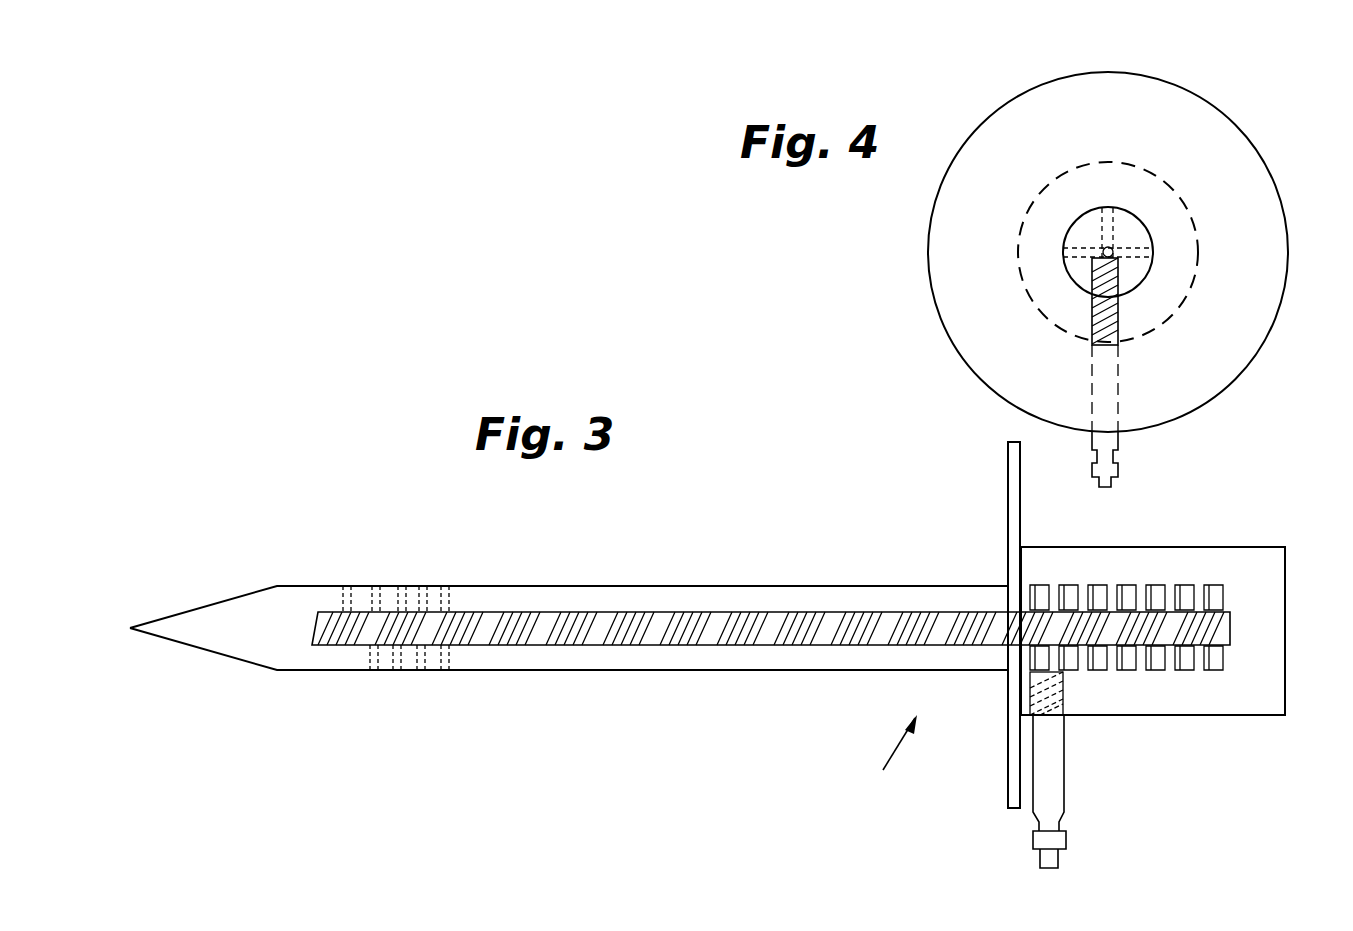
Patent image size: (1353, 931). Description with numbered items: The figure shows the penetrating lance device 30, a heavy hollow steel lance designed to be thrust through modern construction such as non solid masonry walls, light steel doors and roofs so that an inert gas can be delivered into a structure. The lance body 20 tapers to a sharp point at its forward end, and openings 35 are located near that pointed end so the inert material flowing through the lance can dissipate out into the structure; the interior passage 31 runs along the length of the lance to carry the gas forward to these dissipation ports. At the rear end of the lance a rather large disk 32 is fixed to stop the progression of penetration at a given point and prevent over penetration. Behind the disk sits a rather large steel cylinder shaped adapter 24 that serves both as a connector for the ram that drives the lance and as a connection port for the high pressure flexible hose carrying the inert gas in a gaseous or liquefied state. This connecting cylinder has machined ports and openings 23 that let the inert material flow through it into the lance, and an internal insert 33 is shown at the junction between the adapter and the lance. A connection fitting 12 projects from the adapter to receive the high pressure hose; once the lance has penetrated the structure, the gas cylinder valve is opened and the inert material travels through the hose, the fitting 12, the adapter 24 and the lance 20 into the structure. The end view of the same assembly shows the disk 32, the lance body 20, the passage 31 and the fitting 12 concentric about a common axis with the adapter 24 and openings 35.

In FIG. 3, the connector / screw 12 is at (1066, 808).
In FIG. 4, the connector / screw 12 is at (1120, 467).
In FIG. 3, the elongated body 20 is at (945, 585).
In FIG. 4, the elongated body 20 is at (1134, 232).
In FIG. 3, the teeth 23 is at (1163, 595).
In FIG. 3, the housing block 24 is at (1283, 547).
In FIG. 4, the housing block 24 is at (1200, 270).
In FIG. 3, the probe assembly 30 is at (1196, 734).
In FIG. 3, the hatched rod 31 is at (600, 612).
In FIG. 4, the hatched rod 31 is at (1108, 247).
In FIG. 3, the plate / disc 32 is at (1006, 786).
In FIG. 4, the plate / disc 32 is at (1018, 97).
In FIG. 3, the hatched insert 33 is at (1062, 698).
In FIG. 3, the dashed openings 35 is at (450, 606).
In FIG. 4, the dashed openings 35 is at (1092, 258).